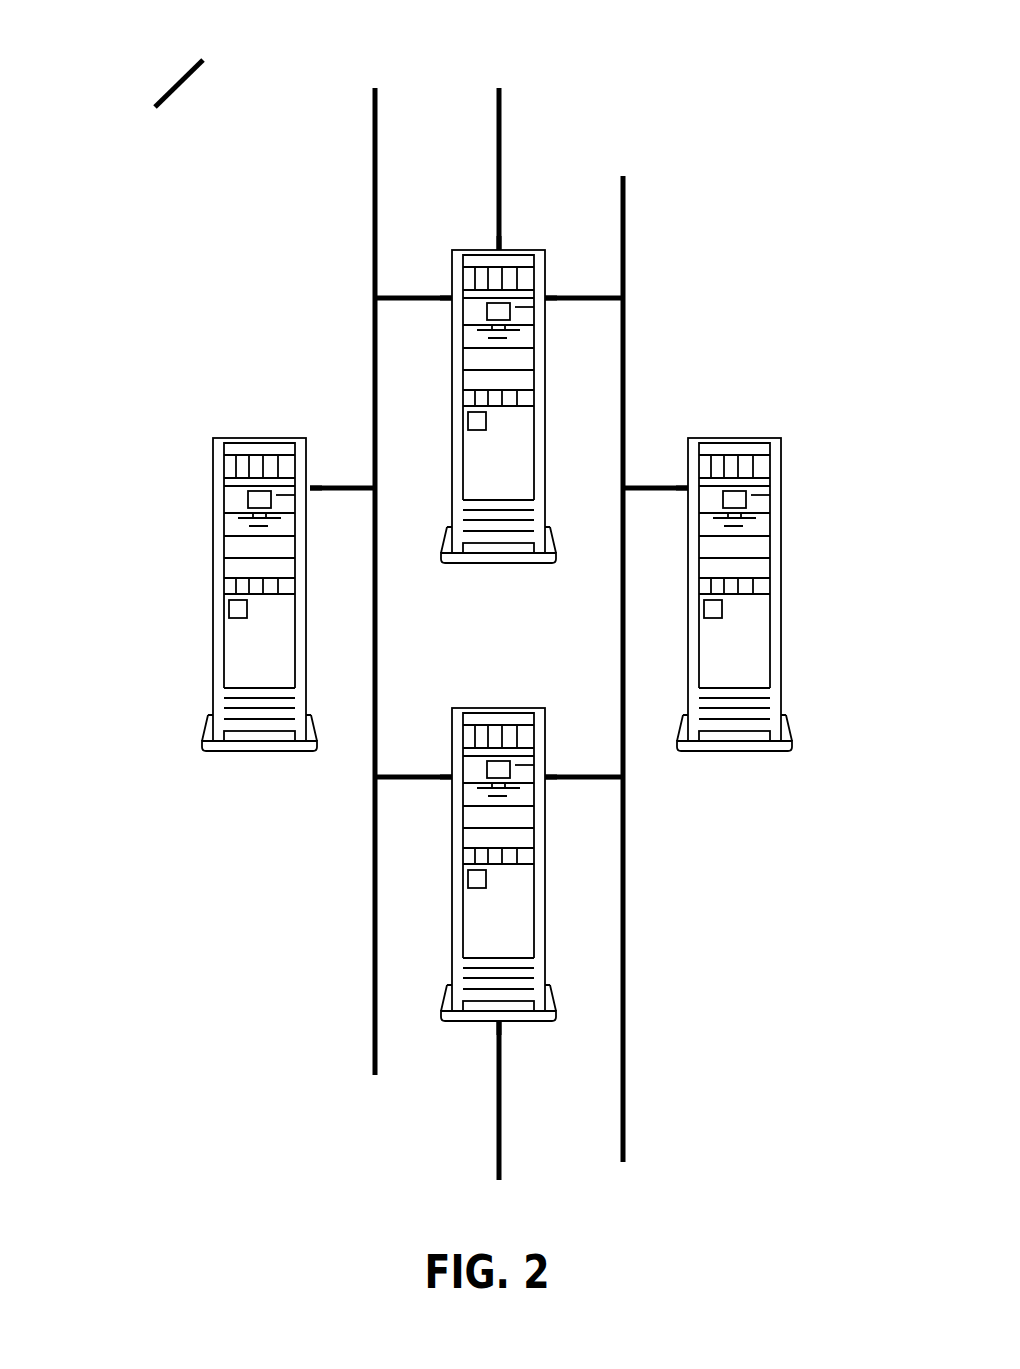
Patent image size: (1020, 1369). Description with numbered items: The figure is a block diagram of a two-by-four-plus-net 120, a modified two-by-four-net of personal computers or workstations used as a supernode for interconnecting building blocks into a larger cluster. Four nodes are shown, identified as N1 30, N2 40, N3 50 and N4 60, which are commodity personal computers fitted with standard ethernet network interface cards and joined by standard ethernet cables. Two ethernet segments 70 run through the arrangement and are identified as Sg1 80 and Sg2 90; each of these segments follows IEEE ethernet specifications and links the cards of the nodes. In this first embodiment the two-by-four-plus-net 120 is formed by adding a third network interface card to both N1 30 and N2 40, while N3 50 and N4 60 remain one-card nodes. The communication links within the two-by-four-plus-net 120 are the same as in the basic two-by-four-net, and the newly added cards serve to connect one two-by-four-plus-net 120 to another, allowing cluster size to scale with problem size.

The node N1 30 is at (495, 367).
The node N2 40 is at (508, 908).
The node N3 50 is at (230, 594).
The node N4 60 is at (767, 594).
The ethernet segment 70 is at (497, 634).
The segment Sg1 80 is at (373, 262).
The segment Sg2 90 is at (625, 265).
The 2×4+net 120 is at (170, 78).